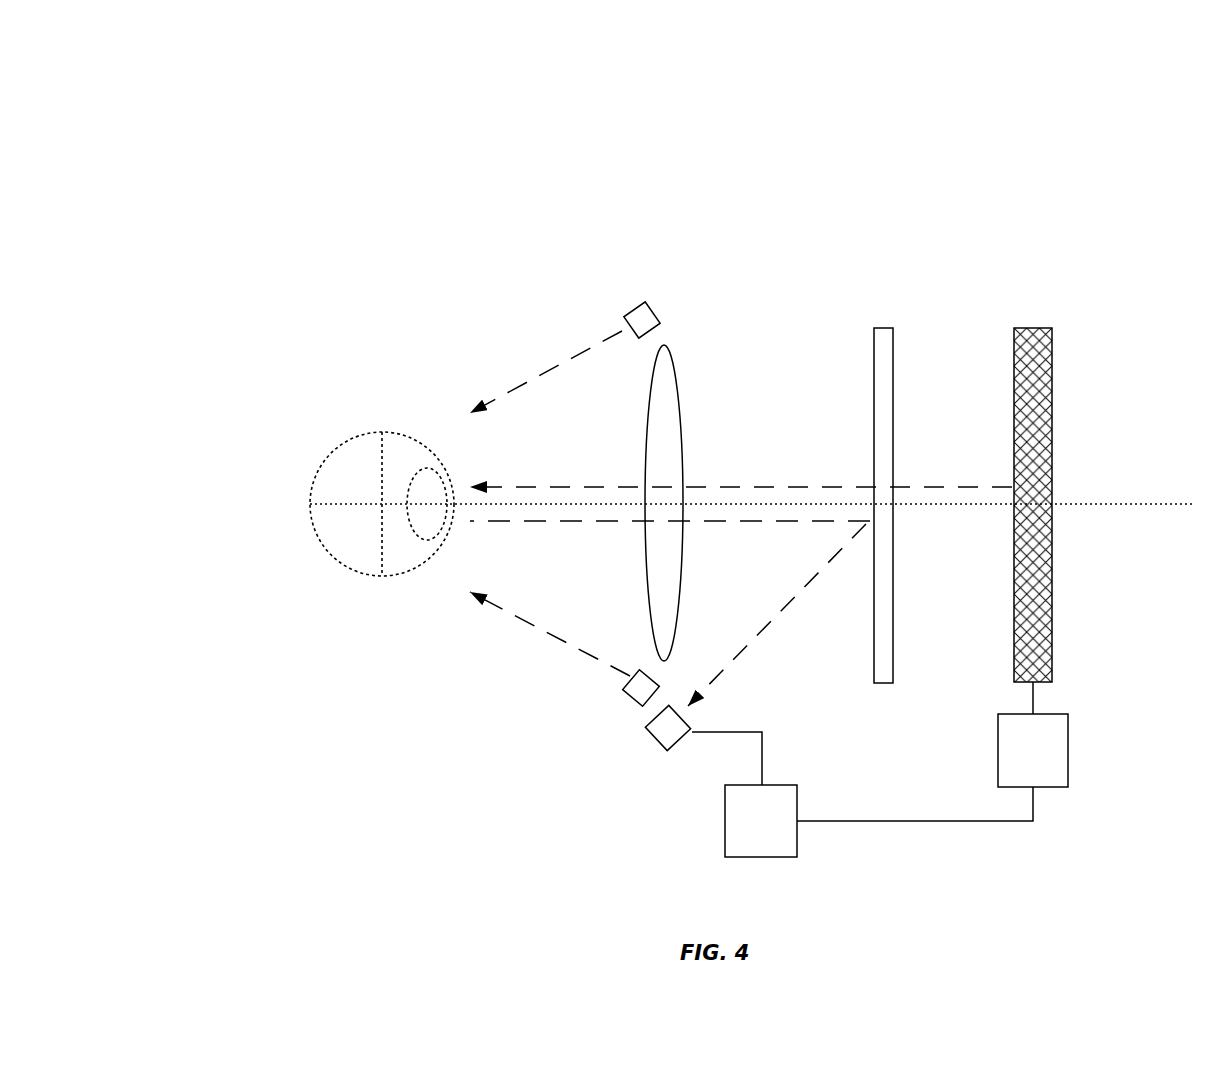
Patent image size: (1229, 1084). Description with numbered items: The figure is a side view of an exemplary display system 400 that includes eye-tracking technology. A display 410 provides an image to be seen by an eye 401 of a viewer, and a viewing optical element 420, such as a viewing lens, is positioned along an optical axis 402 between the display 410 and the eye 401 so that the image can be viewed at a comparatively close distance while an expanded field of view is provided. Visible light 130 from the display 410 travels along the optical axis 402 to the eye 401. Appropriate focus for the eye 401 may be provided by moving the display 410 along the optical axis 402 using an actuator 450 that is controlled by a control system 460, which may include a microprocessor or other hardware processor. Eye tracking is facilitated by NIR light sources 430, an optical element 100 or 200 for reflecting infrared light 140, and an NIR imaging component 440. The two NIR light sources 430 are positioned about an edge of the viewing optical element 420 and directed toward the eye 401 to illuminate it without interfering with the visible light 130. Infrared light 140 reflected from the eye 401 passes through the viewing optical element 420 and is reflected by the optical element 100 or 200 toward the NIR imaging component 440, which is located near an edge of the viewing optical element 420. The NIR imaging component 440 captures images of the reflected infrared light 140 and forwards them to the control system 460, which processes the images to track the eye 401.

The display system 400 is at (220, 144).
The eye 401 is at (381, 433).
The optical axis 402 is at (1173, 503).
The viewing optical element 420 is at (681, 400).
The optical element 100 is at (860, 437).
The optical element 200 is at (881, 328).
The display 410 is at (1033, 328).
The visible light 130 is at (822, 487).
The infrared light 140 is at (792, 662).
The NIR light source 430 is at (612, 716).
The NIR imaging component 440 is at (660, 752).
The actuator 450 is at (1068, 748).
The control system 460 is at (797, 805).